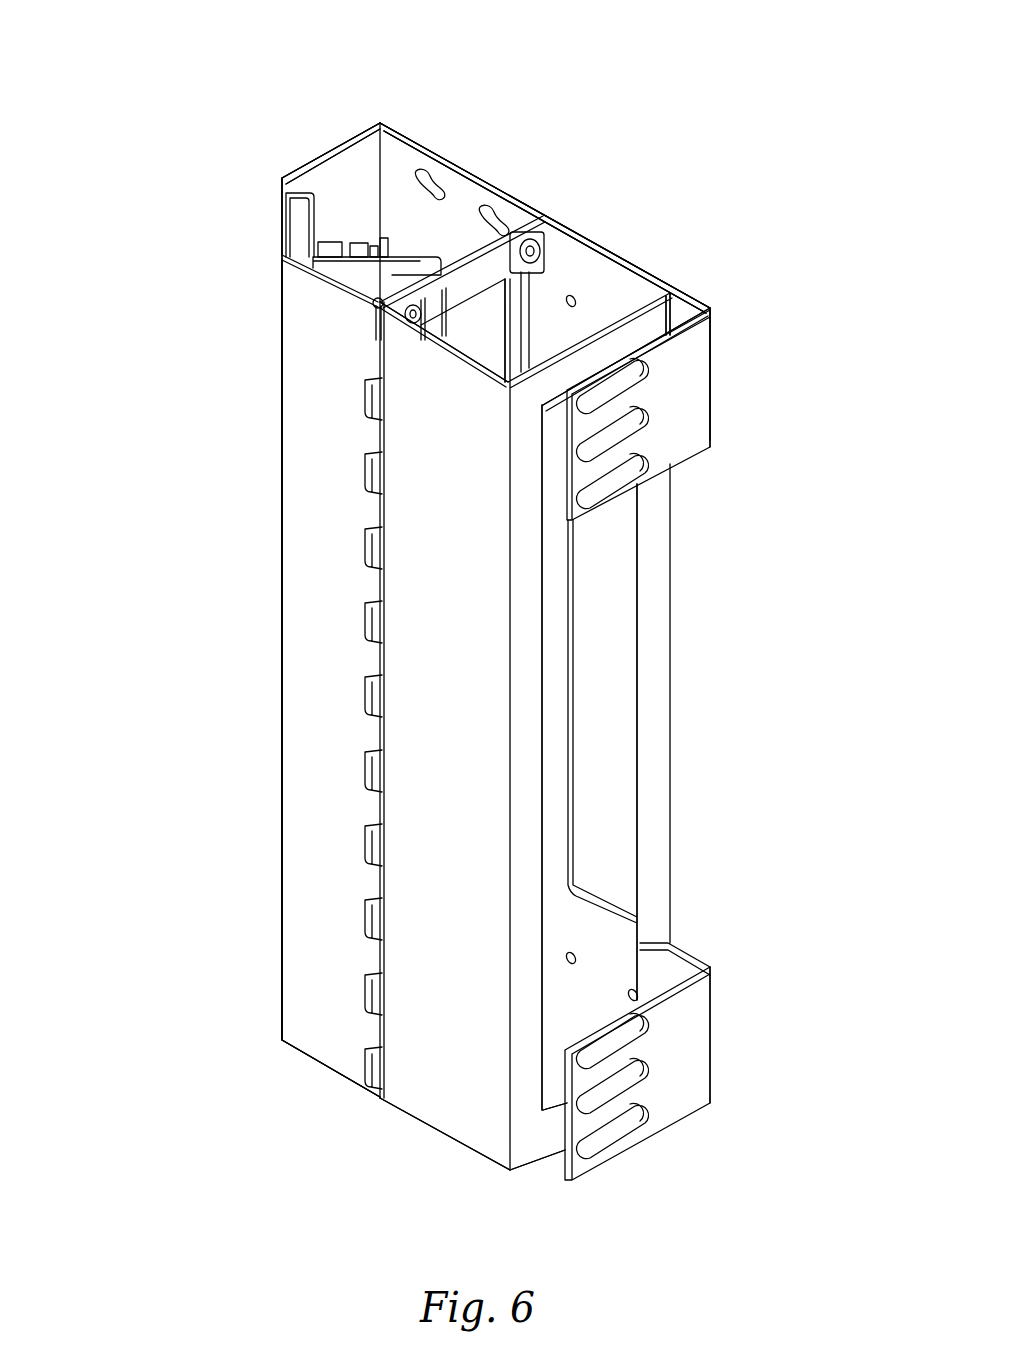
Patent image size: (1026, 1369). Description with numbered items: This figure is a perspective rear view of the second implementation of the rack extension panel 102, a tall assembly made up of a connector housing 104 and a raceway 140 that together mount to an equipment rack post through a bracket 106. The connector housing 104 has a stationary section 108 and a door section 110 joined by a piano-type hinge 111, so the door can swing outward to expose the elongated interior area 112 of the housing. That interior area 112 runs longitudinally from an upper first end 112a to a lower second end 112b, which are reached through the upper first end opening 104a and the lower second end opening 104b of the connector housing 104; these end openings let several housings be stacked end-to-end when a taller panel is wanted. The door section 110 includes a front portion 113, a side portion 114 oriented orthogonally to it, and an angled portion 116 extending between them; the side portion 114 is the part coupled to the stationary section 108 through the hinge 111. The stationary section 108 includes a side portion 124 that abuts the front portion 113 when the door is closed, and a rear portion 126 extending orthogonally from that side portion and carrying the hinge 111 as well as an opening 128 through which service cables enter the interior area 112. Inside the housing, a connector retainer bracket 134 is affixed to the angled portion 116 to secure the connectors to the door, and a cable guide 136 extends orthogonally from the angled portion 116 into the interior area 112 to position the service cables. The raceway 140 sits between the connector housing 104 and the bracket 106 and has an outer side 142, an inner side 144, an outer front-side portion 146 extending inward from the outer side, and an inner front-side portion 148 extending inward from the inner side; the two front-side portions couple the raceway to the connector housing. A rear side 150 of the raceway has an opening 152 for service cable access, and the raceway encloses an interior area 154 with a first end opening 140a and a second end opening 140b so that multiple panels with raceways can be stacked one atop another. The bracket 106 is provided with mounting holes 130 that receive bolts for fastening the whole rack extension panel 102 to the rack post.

The rack extension panel 102 is at (712, 44).
The connector housing 104 is at (288, 104).
The upper first end opening 104a is at (304, 1104).
The lower second end opening 104b is at (335, 185).
The bracket 106 is at (715, 335).
The stationary section 108 is at (507, 135).
The door section 110 is at (235, 616).
The piano-type hinge 111 is at (375, 768).
The elongated interior area 112 is at (393, 183).
The upper first end 112a is at (288, 1078).
The lower second end 112b is at (462, 118).
The front portion 113 is at (338, 130).
The side portion 114 is at (310, 925).
The angled portion 116 is at (300, 236).
The side portion 124 is at (497, 210).
The rear portion 126 is at (492, 285).
The opening 128 is at (465, 318).
The mounting holes 130 is at (640, 383).
The connector retainer bracket 134 is at (312, 204).
The cable guide 136 is at (352, 268).
The raceway 140 is at (695, 205).
The first end opening 140a is at (403, 1165).
The second end opening 140b is at (603, 293).
The outer side 142 is at (640, 250).
The inner side 144 is at (447, 1092).
The outer front-side portion 146 is at (568, 265).
The inner front-side portion 148 is at (413, 322).
The rear side 150 is at (690, 292).
The opening 152 is at (660, 945).
The interior area 154 is at (650, 272).